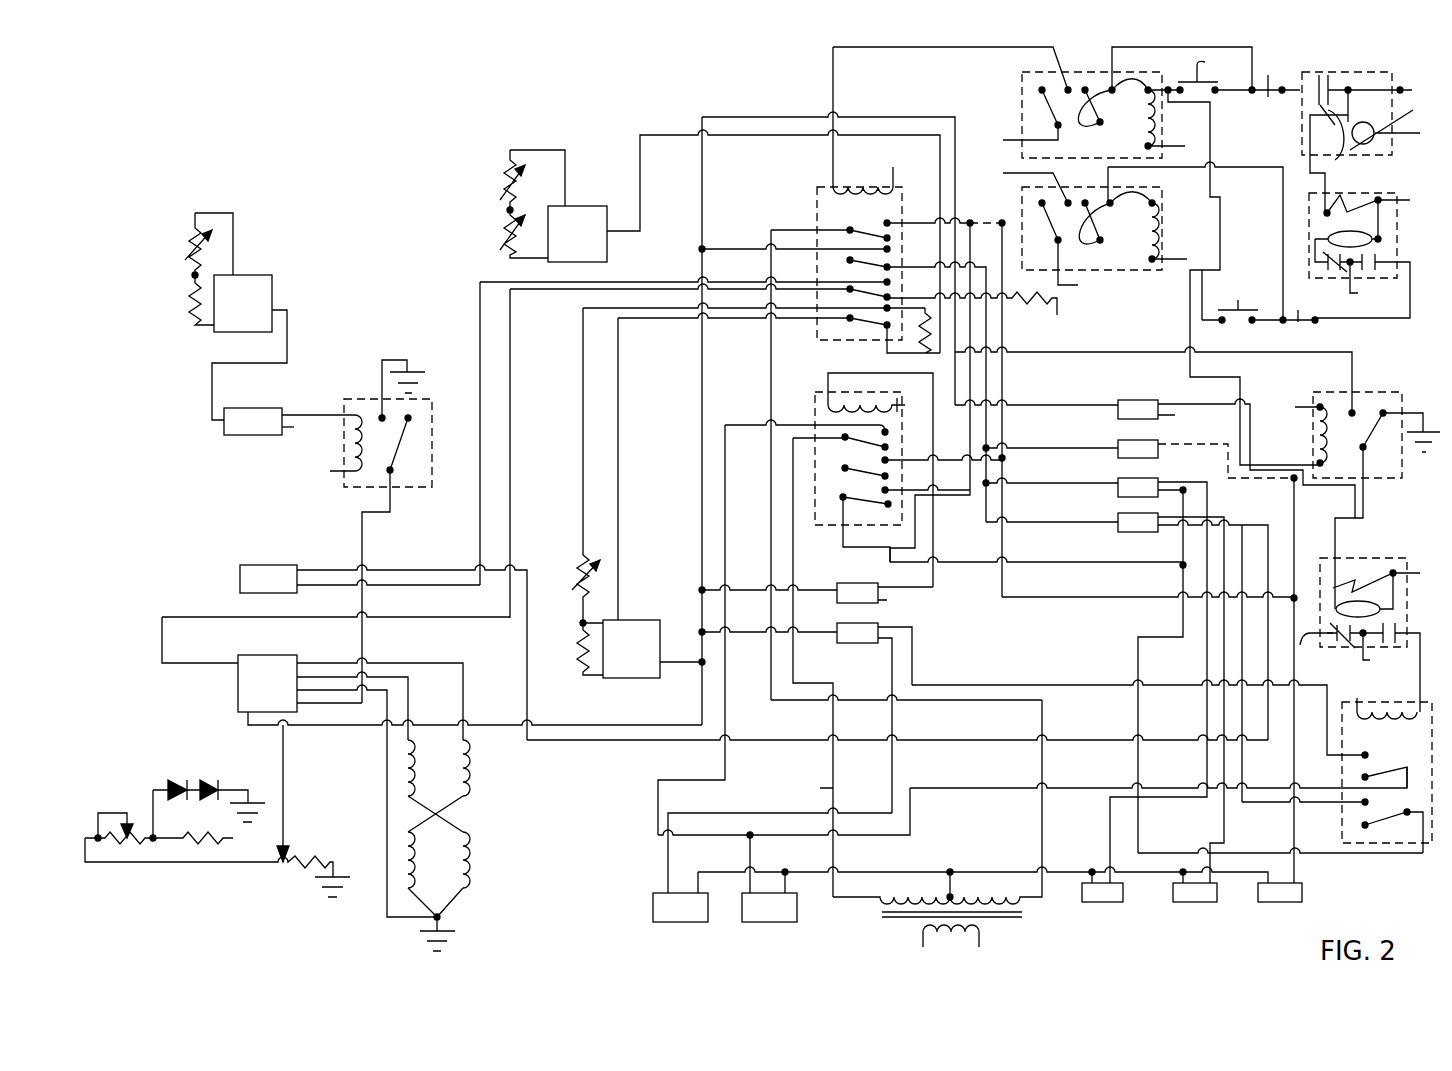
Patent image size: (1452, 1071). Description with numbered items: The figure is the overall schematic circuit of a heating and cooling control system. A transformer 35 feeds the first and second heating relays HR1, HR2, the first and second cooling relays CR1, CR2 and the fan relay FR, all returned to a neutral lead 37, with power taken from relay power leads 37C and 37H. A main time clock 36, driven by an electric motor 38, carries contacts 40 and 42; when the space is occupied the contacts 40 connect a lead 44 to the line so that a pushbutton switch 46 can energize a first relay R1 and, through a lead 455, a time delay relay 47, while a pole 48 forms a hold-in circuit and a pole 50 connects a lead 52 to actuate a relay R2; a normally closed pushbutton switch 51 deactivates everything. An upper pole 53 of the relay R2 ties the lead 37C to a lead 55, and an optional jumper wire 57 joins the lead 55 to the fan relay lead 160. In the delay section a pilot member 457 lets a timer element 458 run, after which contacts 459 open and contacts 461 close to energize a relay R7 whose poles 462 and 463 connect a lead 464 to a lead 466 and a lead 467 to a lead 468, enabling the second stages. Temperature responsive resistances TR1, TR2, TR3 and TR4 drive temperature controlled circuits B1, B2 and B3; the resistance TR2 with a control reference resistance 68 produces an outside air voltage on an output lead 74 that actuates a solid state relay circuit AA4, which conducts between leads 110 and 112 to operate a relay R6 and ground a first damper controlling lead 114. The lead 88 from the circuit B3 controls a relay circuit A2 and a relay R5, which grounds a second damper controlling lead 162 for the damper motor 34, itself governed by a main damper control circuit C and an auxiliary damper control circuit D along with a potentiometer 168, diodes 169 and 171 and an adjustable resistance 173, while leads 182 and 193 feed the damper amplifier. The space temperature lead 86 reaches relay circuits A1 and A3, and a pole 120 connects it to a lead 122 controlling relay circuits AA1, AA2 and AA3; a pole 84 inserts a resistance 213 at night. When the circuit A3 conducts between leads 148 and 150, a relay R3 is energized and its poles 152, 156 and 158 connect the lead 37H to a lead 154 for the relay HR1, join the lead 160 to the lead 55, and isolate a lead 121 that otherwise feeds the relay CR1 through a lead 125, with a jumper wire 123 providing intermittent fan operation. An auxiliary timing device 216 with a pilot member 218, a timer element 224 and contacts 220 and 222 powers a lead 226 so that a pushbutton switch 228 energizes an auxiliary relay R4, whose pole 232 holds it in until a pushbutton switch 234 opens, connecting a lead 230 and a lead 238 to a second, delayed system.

The second temperature responsive resistance TR2 is at (193, 241).
The control reference resistance 68 is at (190, 300).
The second temperature controlled circuit B2 is at (244, 298).
The output lead 74 is at (287, 340).
The solid state relay circuit AA4 is at (244, 432).
The lead 110 is at (285, 415).
The lead 112 is at (288, 430).
The relay R6 is at (432, 465).
The first damper controlling lead 114 is at (365, 545).
The temperature responsive resistance TR3 is at (508, 178).
The temperature responsive resistance TR4 is at (508, 224).
The third temperature controlled circuit B3 is at (575, 225).
The output lead 88 is at (688, 135).
The lead 193 is at (600, 282).
The lead 182 is at (511, 460).
The lead 52 is at (833, 85).
The relay R2 is at (817, 333).
The upper pole 53 is at (880, 232).
The pole 120 is at (850, 262).
The pole 84 is at (860, 320).
The resistance 213 is at (930, 355).
The jumper wire 57 is at (1002, 222).
The lead 55 is at (1000, 245).
The first relay R1 is at (1162, 125).
The pole 50 is at (1042, 90).
The pole 48 is at (1165, 105).
The pushbutton switch 46 is at (1200, 74).
The lead 44 is at (1285, 98).
The normally closed pushbutton switch 51 is at (1278, 100).
The contacts 40 is at (1338, 62).
The main time clock 36 is at (1358, 72).
The electric motor 38 is at (1397, 120).
The contacts 42 is at (1332, 158).
The lead 230 is at (1013, 177).
The auxiliary relay R4 is at (1128, 272).
The pole 232 is at (1108, 238).
The lead 455 is at (1202, 323).
The lead 238 is at (1203, 330).
The pushbutton switch 228 is at (1265, 275).
The pushbutton switch 234 is at (1296, 322).
The pilot member 218 is at (1350, 205).
The timer element 224 is at (1370, 232).
The auxiliary timing device 216 is at (1397, 252).
The contacts 222 is at (1397, 262).
The contacts 220 is at (1322, 268).
The lead 226 is at (1380, 320).
The relay R3 is at (818, 520).
The pole 152 is at (885, 430).
The pole 156 is at (862, 480).
The pole 158 is at (847, 502).
The lead 122 is at (987, 525).
The lead 121 is at (1175, 565).
The fan relay lead 160 is at (1150, 598).
The relay circuit A3 is at (845, 597).
The lead 150 is at (933, 590).
The lead 148 is at (880, 603).
The relay circuit A1 is at (845, 638).
The first temperature responsive resistance TR1 is at (578, 568).
The output lead 86 is at (680, 665).
The first temperature controlled circuit B1 is at (630, 637).
The auxiliary damper control circuit D is at (272, 580).
The main damper control circuit C is at (258, 695).
The second damper controlling lead 162 is at (600, 742).
The damper motor 34 is at (462, 810).
The diode 169 is at (182, 785).
The diode 171 is at (205, 784).
The adjustable resistance 173 is at (120, 840).
The potentiometer 168 is at (290, 865).
The second heating relay HR2 is at (690, 912).
The first heating relay HR1 is at (775, 912).
The lead 154 is at (725, 775).
The relay power lead 37H is at (1095, 788).
The neutral lead 37 is at (1025, 872).
The transformer 35 is at (992, 920).
The relay power lead 37C is at (1042, 785).
The relay circuit A2 is at (1128, 412).
The relay circuit AA3 is at (1130, 452).
The jumper wire 123 is at (1232, 482).
The relay circuit AA1 is at (1130, 490).
The relay circuit AA2 is at (1130, 525).
The lead 125 is at (1207, 665).
The lead 468 is at (1050, 685).
The relay R5 is at (1388, 478).
The time delay relay 47 is at (1407, 598).
The pilot member 457 is at (1352, 588).
The timer element 458 is at (1333, 612).
The contacts 461 is at (1397, 628).
The contacts 459 is at (1323, 658).
The relay R7 is at (1432, 830).
The pole 463 is at (1370, 770).
The lead 467 is at (1254, 790).
The lead 466 is at (1275, 803).
The pole 462 is at (1392, 831).
The lead 464 is at (1318, 855).
The first cooling relay CR1 is at (1112, 905).
The second cooling relay CR2 is at (1200, 905).
The fan relay FR is at (1283, 905).